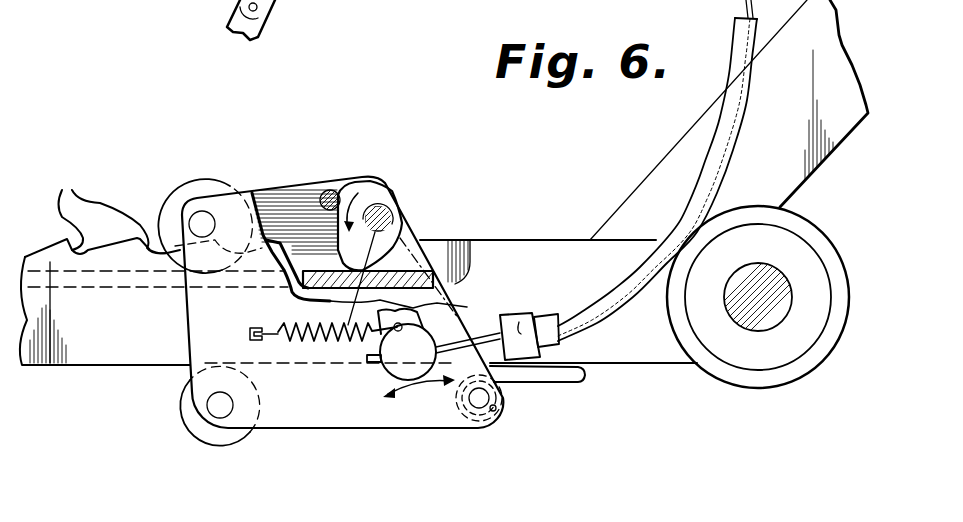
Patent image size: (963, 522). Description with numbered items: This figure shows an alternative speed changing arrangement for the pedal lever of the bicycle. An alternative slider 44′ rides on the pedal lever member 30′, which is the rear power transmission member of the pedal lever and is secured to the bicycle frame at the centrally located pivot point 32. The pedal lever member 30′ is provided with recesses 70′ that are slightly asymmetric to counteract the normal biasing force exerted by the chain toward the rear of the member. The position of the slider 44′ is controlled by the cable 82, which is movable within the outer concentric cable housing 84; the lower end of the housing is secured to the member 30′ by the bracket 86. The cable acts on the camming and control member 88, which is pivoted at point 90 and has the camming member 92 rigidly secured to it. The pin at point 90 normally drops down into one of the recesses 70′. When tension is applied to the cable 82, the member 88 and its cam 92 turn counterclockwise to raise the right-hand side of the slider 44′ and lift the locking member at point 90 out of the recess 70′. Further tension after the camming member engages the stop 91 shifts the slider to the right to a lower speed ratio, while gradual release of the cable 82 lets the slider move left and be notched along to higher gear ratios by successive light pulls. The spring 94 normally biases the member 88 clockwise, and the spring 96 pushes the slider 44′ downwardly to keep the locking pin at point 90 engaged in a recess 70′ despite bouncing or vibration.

The pedal lever member 30′ is at (87, 334).
The recesses 70′ is at (105, 208).
The slider 44′ is at (337, 415).
The camming member 92 is at (350, 262).
The pivot point 90 is at (378, 212).
The stop 91 is at (331, 190).
The camming and control member 88 is at (413, 367).
The spring 94 is at (323, 338).
The cable 82 is at (482, 338).
The bracket 86 is at (518, 312).
The outer concentric cable housing 84 is at (731, 112).
The spring 96 is at (560, 382).
The pivot point 32 is at (763, 295).